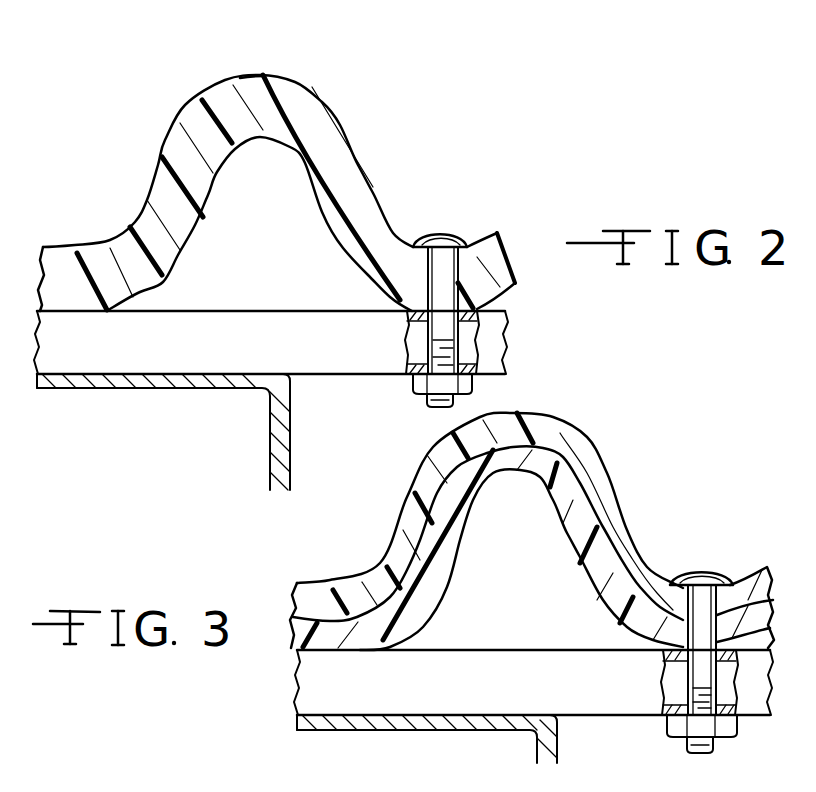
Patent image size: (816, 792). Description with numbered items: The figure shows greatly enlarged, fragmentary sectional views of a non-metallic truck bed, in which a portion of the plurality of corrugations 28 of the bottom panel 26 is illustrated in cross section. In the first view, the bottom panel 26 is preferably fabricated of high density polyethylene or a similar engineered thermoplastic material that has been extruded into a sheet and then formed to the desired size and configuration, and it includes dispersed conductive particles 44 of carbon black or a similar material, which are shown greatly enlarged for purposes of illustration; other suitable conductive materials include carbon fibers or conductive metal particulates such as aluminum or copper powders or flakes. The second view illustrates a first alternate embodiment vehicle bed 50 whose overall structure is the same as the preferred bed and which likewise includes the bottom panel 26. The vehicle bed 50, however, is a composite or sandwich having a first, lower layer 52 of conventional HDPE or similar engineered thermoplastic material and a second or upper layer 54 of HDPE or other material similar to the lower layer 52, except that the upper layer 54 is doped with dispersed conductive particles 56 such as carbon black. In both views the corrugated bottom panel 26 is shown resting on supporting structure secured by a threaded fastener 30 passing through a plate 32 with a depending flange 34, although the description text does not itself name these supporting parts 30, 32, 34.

In FIG. 2, the bottom panel 26 is at (42, 263).
In FIG. 2, the corrugations 28 is at (273, 162).
In FIG. 2, the fastener bolt 30 is at (443, 232).
In FIG. 3, the fastener bolt 30 is at (703, 573).
In FIG. 2, the mounting plate 32 is at (340, 353).
In FIG. 3, the mounting plate 32 is at (590, 700).
In FIG. 2, the flange 34 is at (267, 450).
In FIG. 3, the flange 34 is at (410, 733).
In FIG. 2, the conductive particles 44 is at (257, 97).
In FIG. 3, the first alternate embodiment vehicle bed 50 is at (532, 513).
In FIG. 3, the first, lower layer 52 is at (573, 533).
In FIG. 3, the second or upper layer 54 is at (575, 433).
In FIG. 3, the dispersed conductive particles 56 is at (597, 460).